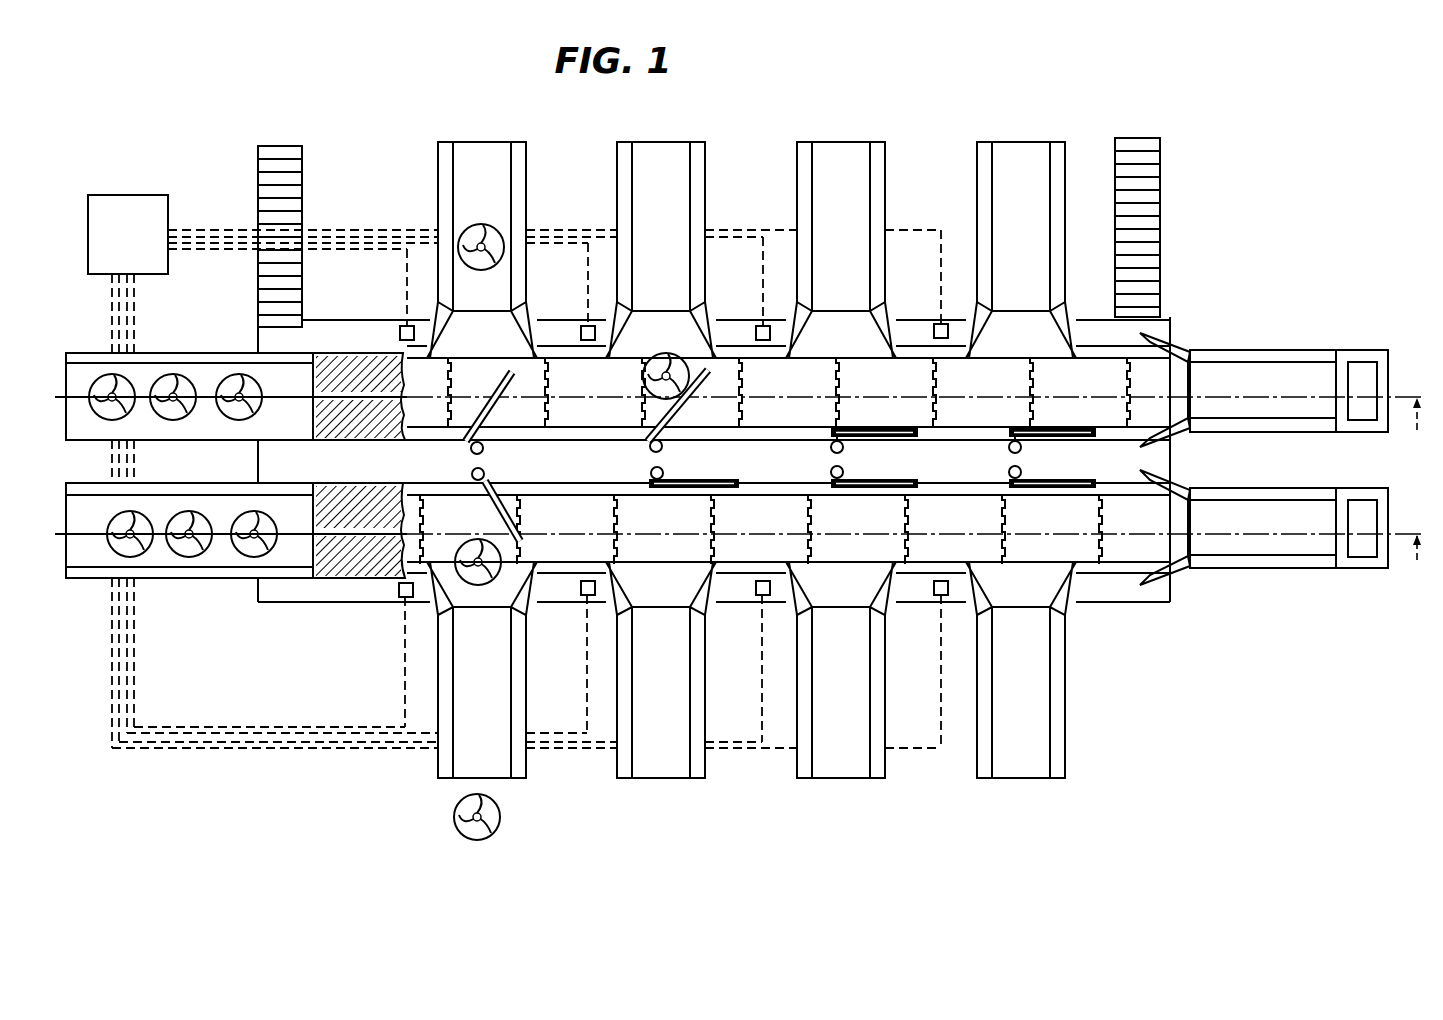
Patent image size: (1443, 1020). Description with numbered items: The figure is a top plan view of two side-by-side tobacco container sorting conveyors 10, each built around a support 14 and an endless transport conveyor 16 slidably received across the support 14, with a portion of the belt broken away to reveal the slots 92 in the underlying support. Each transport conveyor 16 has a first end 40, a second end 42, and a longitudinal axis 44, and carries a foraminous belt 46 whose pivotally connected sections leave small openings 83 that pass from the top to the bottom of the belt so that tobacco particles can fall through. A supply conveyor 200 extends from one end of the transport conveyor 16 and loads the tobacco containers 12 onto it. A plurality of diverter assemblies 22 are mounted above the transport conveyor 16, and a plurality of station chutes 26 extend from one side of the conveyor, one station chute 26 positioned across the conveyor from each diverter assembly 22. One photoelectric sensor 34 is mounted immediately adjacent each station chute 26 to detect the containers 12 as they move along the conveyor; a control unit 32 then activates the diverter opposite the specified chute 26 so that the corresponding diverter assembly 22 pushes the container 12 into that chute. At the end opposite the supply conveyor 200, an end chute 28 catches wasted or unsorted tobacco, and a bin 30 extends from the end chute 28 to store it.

The tobacco container sorting conveyor 10 is at (1193, 192).
The tobacco containers 12 is at (92, 372).
The support 14 is at (345, 354).
The endless transport conveyor 16 is at (909, 357).
The diverter assemblies 22 is at (470, 450).
The station chutes 26 is at (528, 162).
The end chute 28 is at (1308, 350).
The bin 30 is at (1392, 358).
The control unit 32 is at (154, 195).
The photoelectric sensors 34 is at (407, 340).
The first end 40 is at (323, 308).
The second end 42 is at (1183, 312).
The longitudinal axis 44 is at (1417, 430).
The foraminous belt 46 is at (733, 345).
The openings 83 is at (900, 540).
The slots 92 is at (343, 493).
The supply conveyor 200 is at (168, 352).